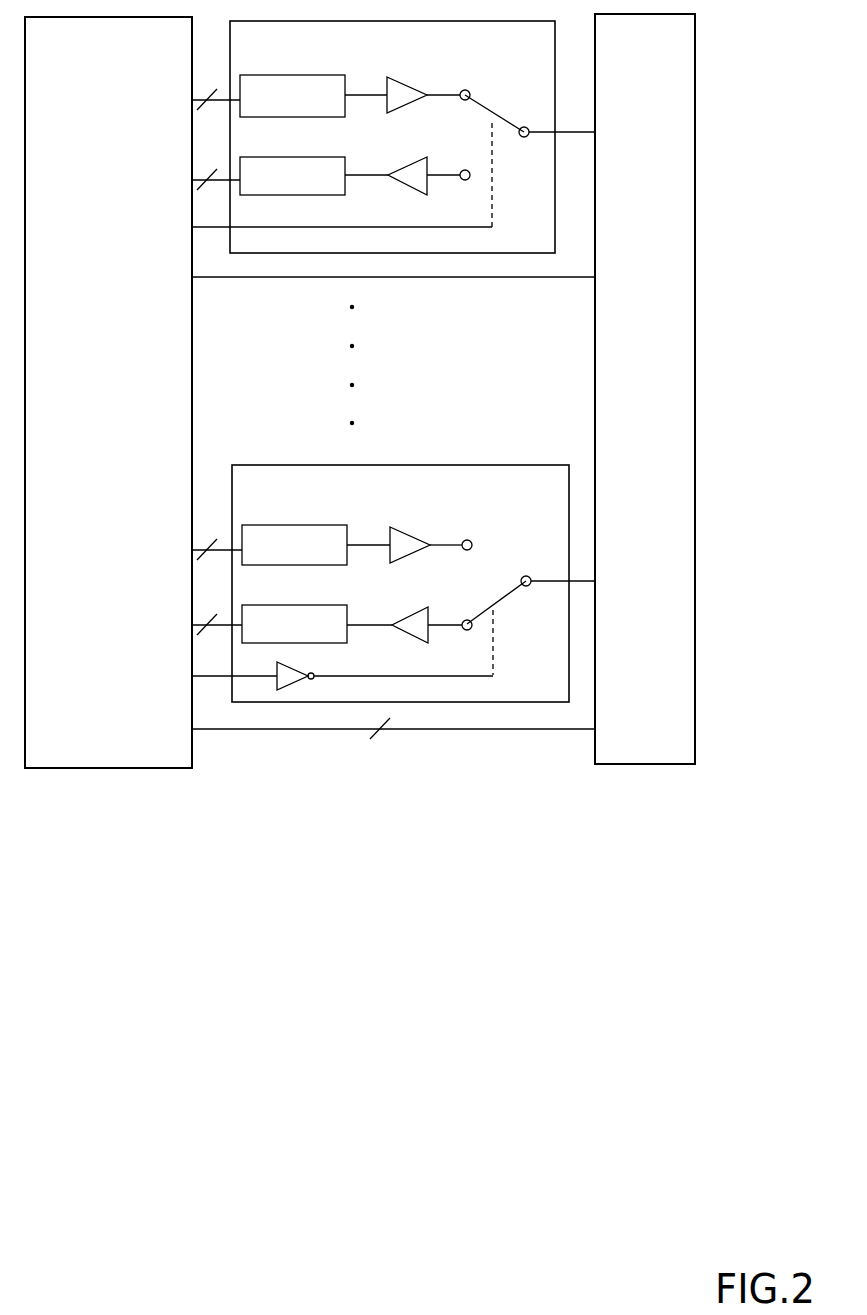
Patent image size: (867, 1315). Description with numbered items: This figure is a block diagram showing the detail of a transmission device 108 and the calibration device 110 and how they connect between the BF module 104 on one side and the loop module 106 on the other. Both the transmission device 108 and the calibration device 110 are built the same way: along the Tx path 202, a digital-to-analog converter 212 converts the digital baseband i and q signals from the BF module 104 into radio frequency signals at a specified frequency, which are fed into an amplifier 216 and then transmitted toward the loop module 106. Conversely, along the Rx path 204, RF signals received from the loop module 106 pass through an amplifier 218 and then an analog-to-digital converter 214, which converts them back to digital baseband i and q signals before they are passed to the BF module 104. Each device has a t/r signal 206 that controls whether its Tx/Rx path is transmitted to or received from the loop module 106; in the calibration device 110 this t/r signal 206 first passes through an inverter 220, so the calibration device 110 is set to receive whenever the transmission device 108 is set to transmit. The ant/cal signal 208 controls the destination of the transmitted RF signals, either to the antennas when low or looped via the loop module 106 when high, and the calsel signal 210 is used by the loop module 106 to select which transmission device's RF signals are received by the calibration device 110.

The BF module 104 is at (108, 392).
The loop module 106 is at (645, 389).
The transmission device 108 is at (412, 137).
The calibration device 110 is at (413, 583).
The Tx path 202 is at (172, 327).
The Rx path 204 is at (172, 402).
The t/r signal 206 is at (297, 451).
The ant/cal signal 208 is at (319, 279).
The calsel signal 210 is at (326, 731).
The digital-to-analog converter 212 is at (285, 107).
The analog-to-digital converter 214 is at (317, 178).
The amplifier 216 is at (403, 90).
The amplifier 218 is at (402, 172).
The inverter 220 is at (280, 683).